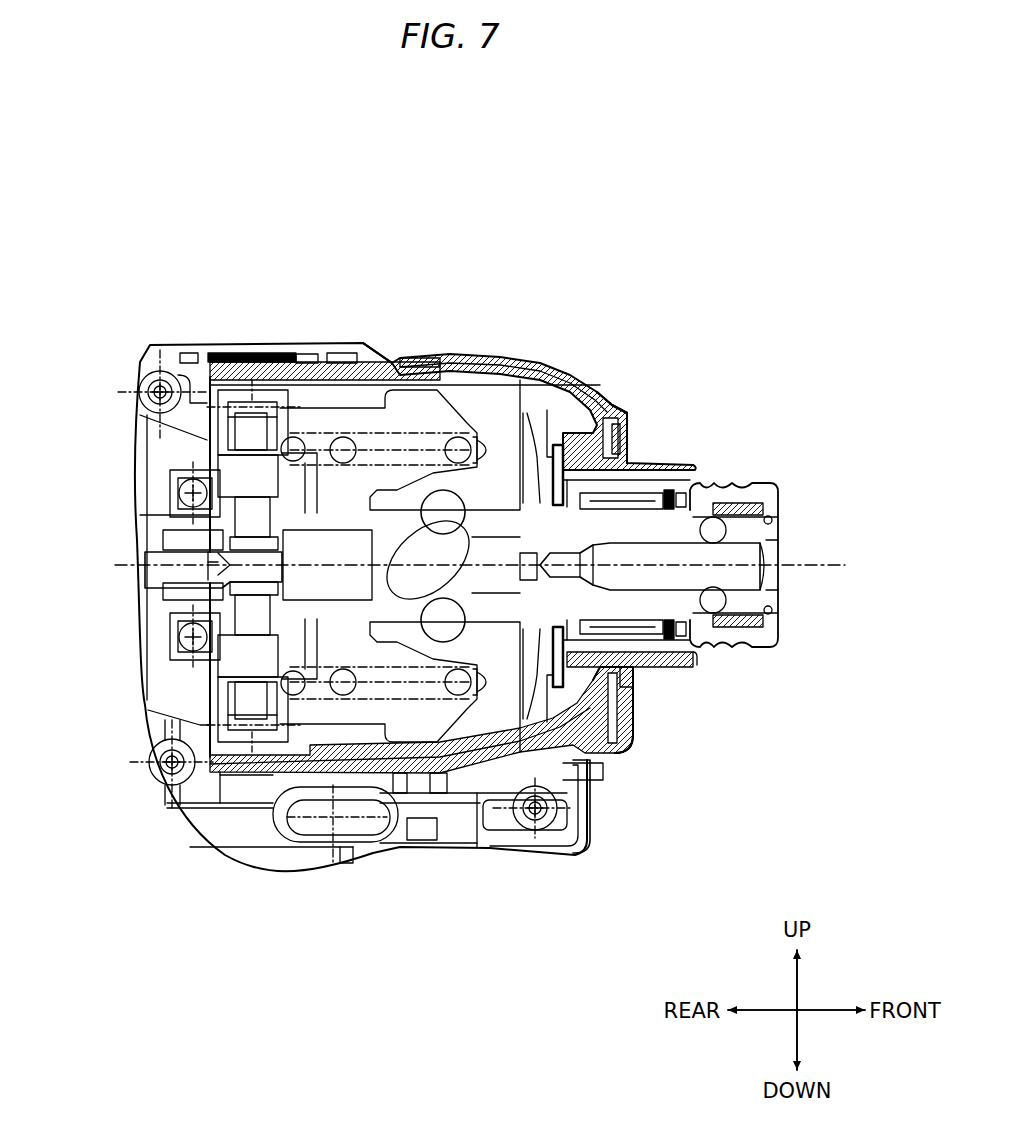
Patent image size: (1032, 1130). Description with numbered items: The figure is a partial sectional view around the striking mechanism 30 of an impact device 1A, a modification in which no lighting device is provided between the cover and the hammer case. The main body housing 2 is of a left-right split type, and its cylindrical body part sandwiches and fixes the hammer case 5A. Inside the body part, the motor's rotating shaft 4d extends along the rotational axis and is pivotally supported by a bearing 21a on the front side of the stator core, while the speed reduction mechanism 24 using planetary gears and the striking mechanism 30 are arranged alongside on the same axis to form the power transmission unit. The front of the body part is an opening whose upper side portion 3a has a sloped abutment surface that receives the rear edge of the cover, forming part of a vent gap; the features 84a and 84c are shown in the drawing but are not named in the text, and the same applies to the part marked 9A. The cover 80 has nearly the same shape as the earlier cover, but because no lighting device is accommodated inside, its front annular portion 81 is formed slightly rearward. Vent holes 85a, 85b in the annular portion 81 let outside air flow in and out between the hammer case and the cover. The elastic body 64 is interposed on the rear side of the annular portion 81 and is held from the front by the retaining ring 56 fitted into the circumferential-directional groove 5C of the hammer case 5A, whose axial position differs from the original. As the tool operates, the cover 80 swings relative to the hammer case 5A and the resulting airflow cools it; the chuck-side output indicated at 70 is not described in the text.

The impact device 1A is at (742, 248).
The main body housing 2 is at (170, 353).
The upper side portion 3a is at (361, 268).
The upper rib 84a is at (394, 352).
The hammer case 5A is at (313, 362).
The speed reduction mechanism 24 is at (233, 383).
The striking mechanism 30 is at (499, 372).
The elastic member 9A is at (433, 366).
The cover 80 is at (517, 370).
The elastic body 64 is at (601, 423).
The vent hole 85a is at (634, 411).
The annular portion 81 is at (633, 440).
The retaining ring 56 is at (633, 460).
The circumferential-directional groove 5C is at (683, 483).
The chuck 70 is at (778, 652).
The rotating shaft 4d is at (155, 556).
The bearing 21a is at (177, 633).
The vent hole 85b is at (636, 714).
The lower rib 84c is at (572, 772).